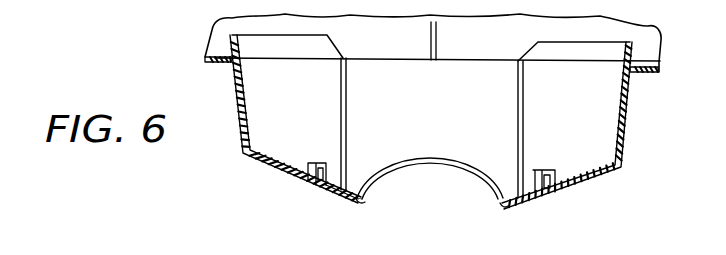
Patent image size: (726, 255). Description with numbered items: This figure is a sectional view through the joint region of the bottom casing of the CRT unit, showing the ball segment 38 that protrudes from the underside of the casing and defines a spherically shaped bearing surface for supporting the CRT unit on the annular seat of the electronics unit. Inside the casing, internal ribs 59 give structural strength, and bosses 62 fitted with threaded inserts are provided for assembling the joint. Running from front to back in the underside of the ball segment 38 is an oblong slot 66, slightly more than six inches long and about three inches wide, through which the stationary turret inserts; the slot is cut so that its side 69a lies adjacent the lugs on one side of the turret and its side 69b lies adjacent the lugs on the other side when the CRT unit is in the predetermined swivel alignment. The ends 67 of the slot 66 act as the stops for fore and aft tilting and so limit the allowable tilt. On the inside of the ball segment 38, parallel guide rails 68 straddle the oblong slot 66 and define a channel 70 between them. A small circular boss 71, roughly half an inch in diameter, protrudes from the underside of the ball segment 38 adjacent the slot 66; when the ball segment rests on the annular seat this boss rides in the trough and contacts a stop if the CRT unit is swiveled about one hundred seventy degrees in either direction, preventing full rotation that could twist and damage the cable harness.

The ball segment 38 is at (293, 182).
The internal ribs 59 is at (237, 48).
The bosses 62 is at (308, 168).
The oblong slot 66 is at (408, 190).
The ends of slot 67 is at (465, 167).
The parallel guide rails 68 is at (348, 108).
The side of slot 69a is at (363, 202).
The side of slot 69b is at (503, 206).
The channel 70 is at (443, 127).
The circular boss 71 is at (328, 197).